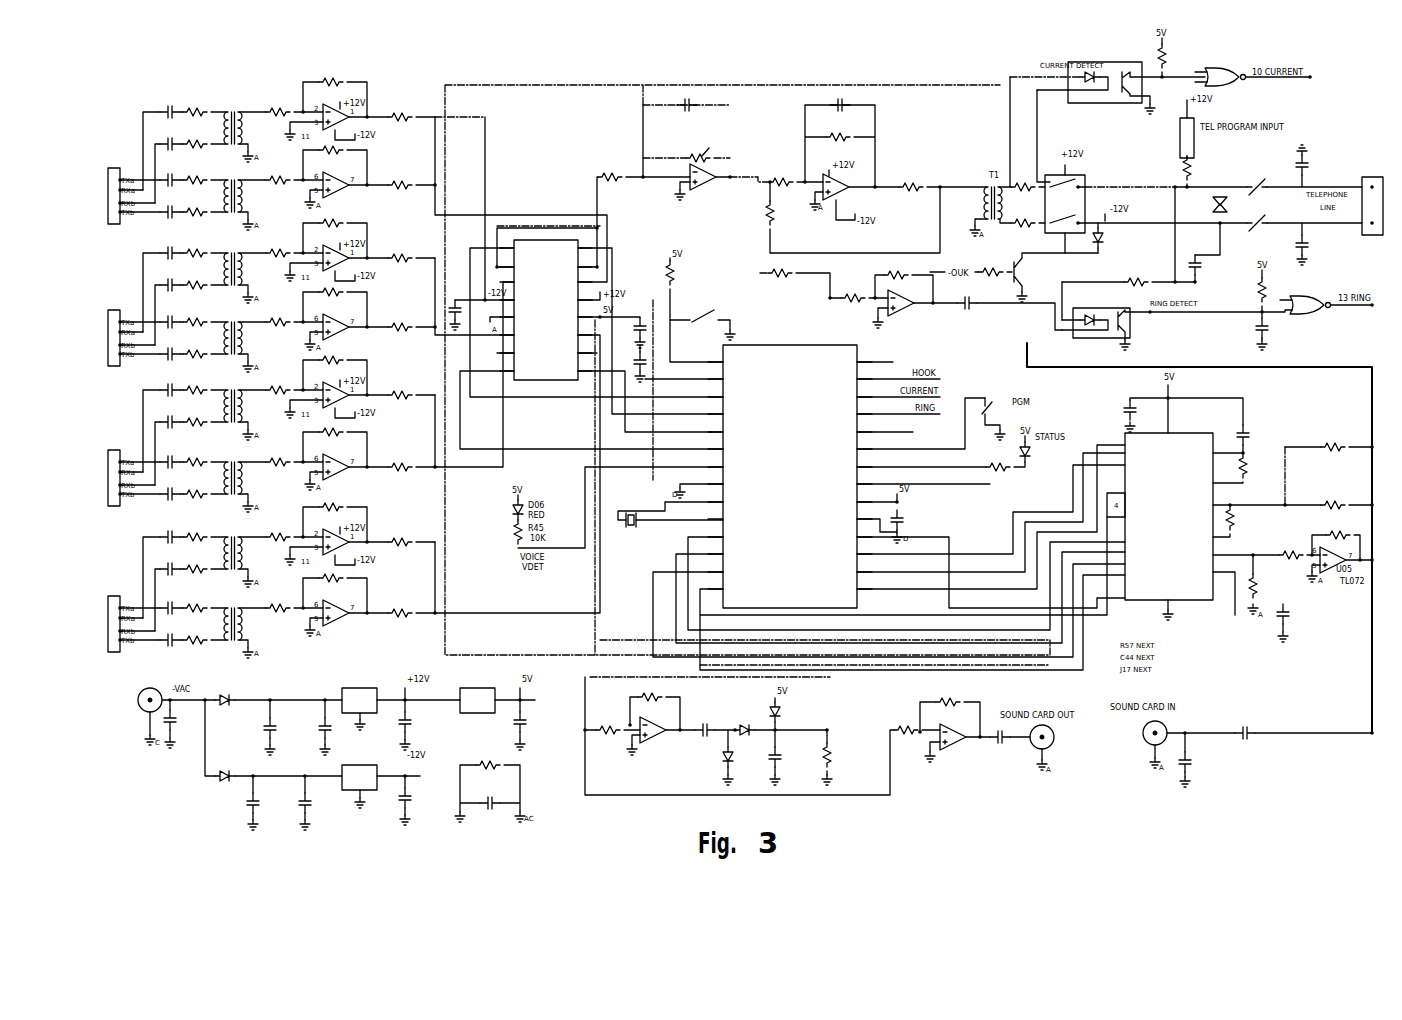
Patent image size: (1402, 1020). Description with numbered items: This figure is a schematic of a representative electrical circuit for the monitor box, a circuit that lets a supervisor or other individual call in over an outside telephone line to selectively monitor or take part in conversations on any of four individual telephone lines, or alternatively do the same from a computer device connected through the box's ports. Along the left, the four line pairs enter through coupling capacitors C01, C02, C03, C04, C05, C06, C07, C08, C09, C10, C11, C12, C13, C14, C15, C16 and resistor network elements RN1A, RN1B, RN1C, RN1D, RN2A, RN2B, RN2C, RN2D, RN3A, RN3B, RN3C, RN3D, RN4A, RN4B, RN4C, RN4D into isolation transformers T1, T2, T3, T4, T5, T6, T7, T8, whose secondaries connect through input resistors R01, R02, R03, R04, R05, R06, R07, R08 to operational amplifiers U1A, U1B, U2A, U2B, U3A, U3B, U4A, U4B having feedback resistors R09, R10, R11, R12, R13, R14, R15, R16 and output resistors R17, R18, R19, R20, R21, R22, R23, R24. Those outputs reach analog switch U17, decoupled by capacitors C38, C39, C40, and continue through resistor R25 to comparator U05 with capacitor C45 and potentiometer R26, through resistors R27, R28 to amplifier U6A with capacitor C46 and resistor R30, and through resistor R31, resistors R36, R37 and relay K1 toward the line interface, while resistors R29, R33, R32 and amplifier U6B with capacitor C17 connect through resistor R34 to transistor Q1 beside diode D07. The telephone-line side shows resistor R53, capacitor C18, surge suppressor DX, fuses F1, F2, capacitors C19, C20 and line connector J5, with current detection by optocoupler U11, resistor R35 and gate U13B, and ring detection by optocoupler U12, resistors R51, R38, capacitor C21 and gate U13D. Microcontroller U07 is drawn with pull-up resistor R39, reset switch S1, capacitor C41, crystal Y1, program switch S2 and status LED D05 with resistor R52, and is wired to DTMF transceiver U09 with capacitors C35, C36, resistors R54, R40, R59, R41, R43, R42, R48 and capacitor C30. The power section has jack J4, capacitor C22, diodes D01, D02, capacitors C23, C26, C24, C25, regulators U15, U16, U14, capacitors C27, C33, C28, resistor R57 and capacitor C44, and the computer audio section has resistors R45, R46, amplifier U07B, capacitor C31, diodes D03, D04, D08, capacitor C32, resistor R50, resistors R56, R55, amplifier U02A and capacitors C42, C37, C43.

The coupling capacitor C01 is at (170, 115).
The coupling capacitor C02 is at (170, 145).
The coupling capacitor C03 is at (170, 183).
The coupling capacitor C04 is at (170, 213).
The coupling capacitor C05 is at (170, 256).
The coupling capacitor C06 is at (170, 286).
The coupling capacitor C07 is at (170, 325).
The coupling capacitor C08 is at (170, 355).
The coupling capacitor C09 is at (170, 393).
The coupling capacitor C10 is at (170, 423).
The coupling capacitor C11 is at (170, 465).
The coupling capacitor C12 is at (170, 495).
The coupling capacitor C13 is at (170, 540).
The coupling capacitor C14 is at (170, 570).
The coupling capacitor C15 is at (170, 611).
The coupling capacitor C16 is at (170, 641).
The resistor network element RN1A is at (196, 115).
The resistor network element RN1B is at (195, 145).
The resistor network element RN1C is at (196, 183).
The resistor network element RN1D is at (196, 213).
The resistor network element RN2A is at (196, 256).
The resistor network element RN2B is at (195, 286).
The resistor network element RN2C is at (196, 325).
The resistor network element RN2D is at (196, 355).
The resistor network element RN3A is at (196, 393).
The resistor network element RN3B is at (195, 423).
The resistor network element RN3C is at (196, 465).
The resistor network element RN3D is at (196, 495).
The resistor network element RN4A is at (196, 540).
The resistor network element RN4B is at (195, 570).
The resistor network element RN4C is at (196, 611).
The resistor network element RN4D is at (196, 641).
The isolation transformer T1 is at (231, 122).
The isolation transformer T2 is at (231, 190).
The isolation transformer T3 is at (231, 263).
The isolation transformer T4 is at (231, 332).
The isolation transformer T5 is at (231, 400).
The isolation transformer T6 is at (231, 472).
The isolation transformer T7 is at (231, 547).
The isolation transformer T8 is at (231, 618).
The input resistor R01 is at (278, 114).
The input resistor R02 is at (278, 182).
The input resistor R03 is at (278, 255).
The input resistor R04 is at (278, 324).
The input resistor R05 is at (278, 392).
The input resistor R06 is at (278, 464).
The input resistor R07 is at (278, 539).
The input resistor R08 is at (278, 610).
The feedback resistor R09 is at (331, 84).
The feedback resistor R10 is at (331, 152).
The feedback resistor R11 is at (331, 225).
The feedback resistor R12 is at (331, 294).
The feedback resistor R13 is at (331, 362).
The feedback resistor R14 is at (331, 434).
The feedback resistor R15 is at (331, 509).
The feedback resistor R16 is at (331, 580).
The output resistor R17 is at (400, 118).
The output resistor R18 is at (400, 186).
The output resistor R19 is at (400, 259).
The output resistor R20 is at (400, 328).
The output resistor R21 is at (400, 396).
The output resistor R22 is at (400, 468).
The output resistor R23 is at (400, 543).
The output resistor R24 is at (400, 614).
The operational amplifier U1A is at (338, 120).
The operational amplifier U1B is at (339, 188).
The operational amplifier U2A is at (338, 261).
The operational amplifier U2B is at (339, 330).
The operational amplifier U3A is at (338, 398).
The operational amplifier U3B is at (339, 470).
The operational amplifier U4A is at (338, 545).
The operational amplifier U4B is at (339, 616).
The analog switch DG228 U17 is at (546, 303).
The capacitor C38 is at (445, 313).
The capacitor C39 is at (649, 332).
The capacitor C40 is at (649, 364).
The resistor R25 is at (610, 177).
The comparator U05 is at (701, 183).
The capacitor C45 is at (688, 105).
The potentiometer R26 is at (690, 149).
The resistor R27 is at (781, 183).
The resistor R28 is at (853, 217).
The operational amplifier NJM4560D U6A is at (829, 194).
The capacitor C46 is at (839, 105).
The resistor R30 is at (838, 137).
The resistor R31 is at (911, 187).
The resistor R36 is at (1023, 187).
The resistor R37 is at (1023, 223).
The relay K1 is at (1065, 209).
The resistor R29 is at (780, 273).
The resistor R33 is at (853, 298).
The resistor R32 is at (896, 276).
The operational amplifier NJM4560D U6B is at (911, 310).
The capacitor C17 is at (967, 303).
The resistor R34 is at (991, 273).
The transistor 2N2222 Q1 is at (1056, 277).
The diode 1N4002 D07 is at (1114, 238).
The resistor R53 is at (1195, 149).
The capacitor C18 is at (1212, 266).
The surge suppressor 130L10 DX is at (1207, 210).
The fuse F1 is at (1269, 221).
The fuse F2 is at (1269, 185).
The capacitor C19 is at (1324, 160).
The capacitor C20 is at (1324, 250).
The telephone line connector J5 is at (1372, 200).
The optocoupler H11AA1 U11 is at (1106, 88).
The resistor R35 is at (1174, 56).
The NOR gate 4001 U13B is at (1225, 78).
The optocoupler H11AA1 U12 is at (1101, 326).
The resistor R51 is at (1136, 282).
The resistor R38 is at (1272, 290).
The capacitor C21 is at (1273, 334).
The NOR gate 4001 U13D is at (1310, 306).
The pull-up resistor R39 is at (694, 310).
The reset switch S1 is at (702, 325).
The microcontroller PIC16F872 U07 is at (772, 476).
The capacitor C41 is at (908, 526).
The crystal 3.579 MHz Y1 is at (644, 516).
The program switch S2 is at (986, 419).
The resistor R52 is at (998, 467).
The status LED D05 is at (1035, 450).
The DTMF transceiver MT-8880 U09 is at (1180, 520).
The capacitor C35 is at (1142, 409).
The capacitor C36 is at (1254, 435).
The resistor R54 is at (1255, 467).
The resistor R40 is at (1334, 448).
The resistor R59 is at (1334, 506).
The resistor R41 is at (1241, 519).
The resistor R43 is at (1292, 556).
The resistor R42 is at (1340, 535).
The resistor R48 is at (1262, 587).
The capacitor C30 is at (1296, 625).
The power jack J4 is at (147, 703).
The capacitor C22 is at (180, 719).
The diode 1N4002 D01 is at (225, 700).
The capacitor C23 is at (287, 729).
The capacitor C26 is at (336, 729).
The voltage regulator 7812 U15 is at (359, 695).
The capacitor C27 is at (416, 724).
The voltage regulator 7605 U16 is at (477, 695).
The capacitor C33 is at (531, 724).
The diode 1N4002 D02 is at (225, 776).
The capacitor C24 is at (270, 805).
The capacitor C25 is at (316, 805).
The voltage regulator 7912 U14 is at (359, 771).
The capacitor C28 is at (416, 799).
The resistor R57 is at (488, 765).
The capacitor C44 is at (492, 805).
The resistor R45 is at (608, 730).
The resistor R46 is at (650, 698).
The operational amplifier TL072 U07B is at (659, 738).
The capacitor C31 is at (705, 730).
The diode 1N4002 D03 is at (745, 730).
The diode 1N4002 D04 is at (743, 765).
The diode 1N4002 D08 is at (792, 712).
The capacitor C32 is at (787, 765).
The resistor R50 is at (838, 757).
The resistor R56 is at (906, 730).
The resistor R55 is at (948, 702).
The operational amplifier TL072 U02A is at (957, 745).
The capacitor C42 is at (999, 738).
The capacitor C37 is at (1198, 771).
The capacitor C43 is at (1246, 734).